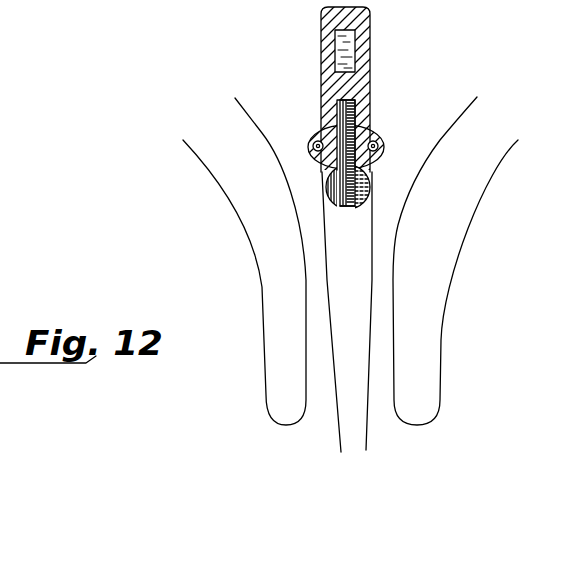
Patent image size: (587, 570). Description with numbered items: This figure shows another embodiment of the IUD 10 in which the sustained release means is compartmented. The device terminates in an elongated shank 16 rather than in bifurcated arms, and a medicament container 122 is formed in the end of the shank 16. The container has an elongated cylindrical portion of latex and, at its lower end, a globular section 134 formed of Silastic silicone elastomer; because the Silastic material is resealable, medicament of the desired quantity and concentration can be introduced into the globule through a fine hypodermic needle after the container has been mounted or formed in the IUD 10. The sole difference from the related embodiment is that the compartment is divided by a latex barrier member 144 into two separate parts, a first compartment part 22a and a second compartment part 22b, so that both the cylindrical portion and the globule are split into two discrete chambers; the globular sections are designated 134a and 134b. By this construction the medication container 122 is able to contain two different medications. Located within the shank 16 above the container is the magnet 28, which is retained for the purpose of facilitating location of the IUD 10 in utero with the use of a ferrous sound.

The IUD 10 is at (374, 71).
The shank 16 is at (333, 93).
The compartment part 22a is at (339, 131).
The compartment part 22b is at (357, 121).
The magnet 28 is at (340, 42).
The medicament container 122 is at (363, 131).
The globular section 134 is at (358, 211).
The globular section 134a is at (328, 197).
The globular section 134b is at (368, 208).
The latex barrier member 144 is at (335, 208).